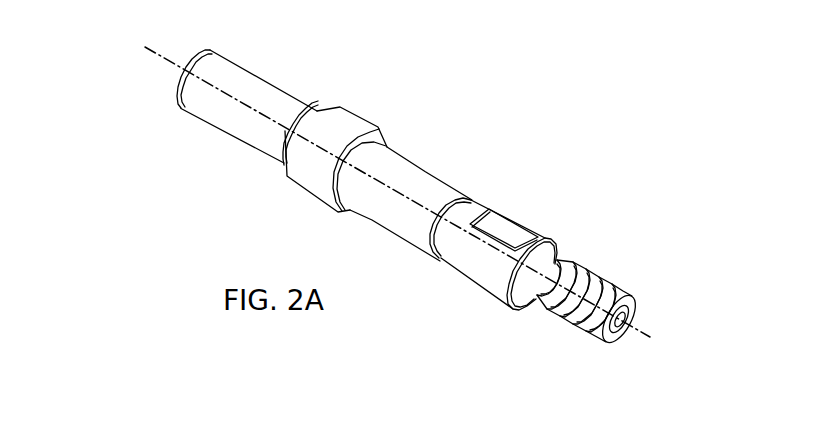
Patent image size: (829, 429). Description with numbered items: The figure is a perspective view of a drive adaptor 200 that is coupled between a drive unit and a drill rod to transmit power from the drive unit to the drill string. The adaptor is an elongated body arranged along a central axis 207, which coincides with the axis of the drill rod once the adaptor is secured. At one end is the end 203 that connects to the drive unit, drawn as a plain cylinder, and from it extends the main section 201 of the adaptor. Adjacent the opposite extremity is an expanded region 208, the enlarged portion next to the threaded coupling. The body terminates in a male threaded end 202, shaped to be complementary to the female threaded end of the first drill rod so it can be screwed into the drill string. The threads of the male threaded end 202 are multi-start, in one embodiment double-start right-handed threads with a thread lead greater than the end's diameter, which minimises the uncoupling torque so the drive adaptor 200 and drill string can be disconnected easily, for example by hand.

The drive adaptor 200 is at (611, 71).
The main section 201 is at (413, 163).
The male threaded end 202 is at (587, 277).
The end connected to the drive unit 203 is at (193, 88).
The axis 207 is at (421, 202).
The expanded region 208 is at (496, 206).